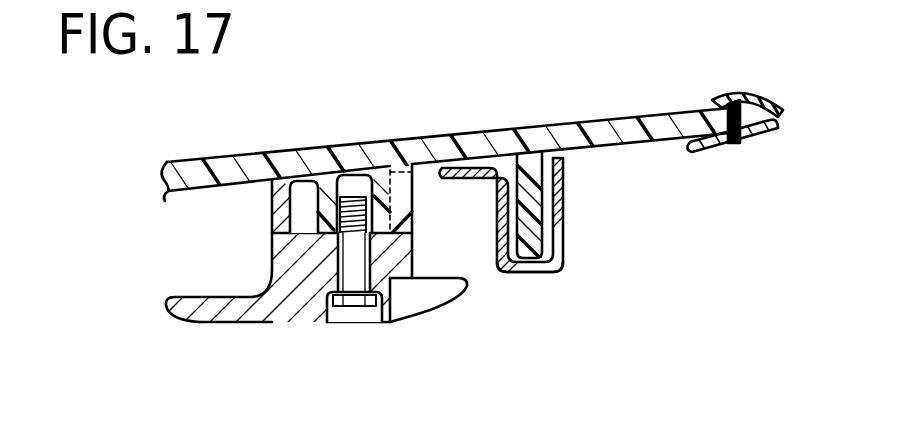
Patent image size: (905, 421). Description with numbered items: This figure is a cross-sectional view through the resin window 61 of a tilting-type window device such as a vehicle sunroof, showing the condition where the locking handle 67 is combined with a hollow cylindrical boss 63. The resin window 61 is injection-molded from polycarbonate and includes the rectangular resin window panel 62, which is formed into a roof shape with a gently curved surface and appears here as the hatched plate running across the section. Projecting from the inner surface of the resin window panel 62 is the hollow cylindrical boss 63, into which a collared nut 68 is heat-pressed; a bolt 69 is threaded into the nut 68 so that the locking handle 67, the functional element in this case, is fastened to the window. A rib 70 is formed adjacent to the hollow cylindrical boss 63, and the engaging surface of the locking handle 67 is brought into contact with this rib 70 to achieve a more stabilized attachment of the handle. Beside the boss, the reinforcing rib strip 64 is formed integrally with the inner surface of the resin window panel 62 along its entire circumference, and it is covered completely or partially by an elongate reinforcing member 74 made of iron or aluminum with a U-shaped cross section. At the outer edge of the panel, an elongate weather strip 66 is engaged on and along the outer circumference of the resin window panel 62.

The resin window 61 is at (607, 116).
The resin window panel 62 is at (227, 172).
The hollow cylindrical boss 63 is at (326, 192).
The reinforcing rib strip 64 is at (533, 210).
The elongate weather strip 66 is at (737, 93).
The locking handle 67 is at (285, 308).
The collared nut 68 is at (382, 205).
The bolt 69 is at (353, 300).
The rib 70 is at (278, 213).
The reinforcing member 74 is at (535, 273).